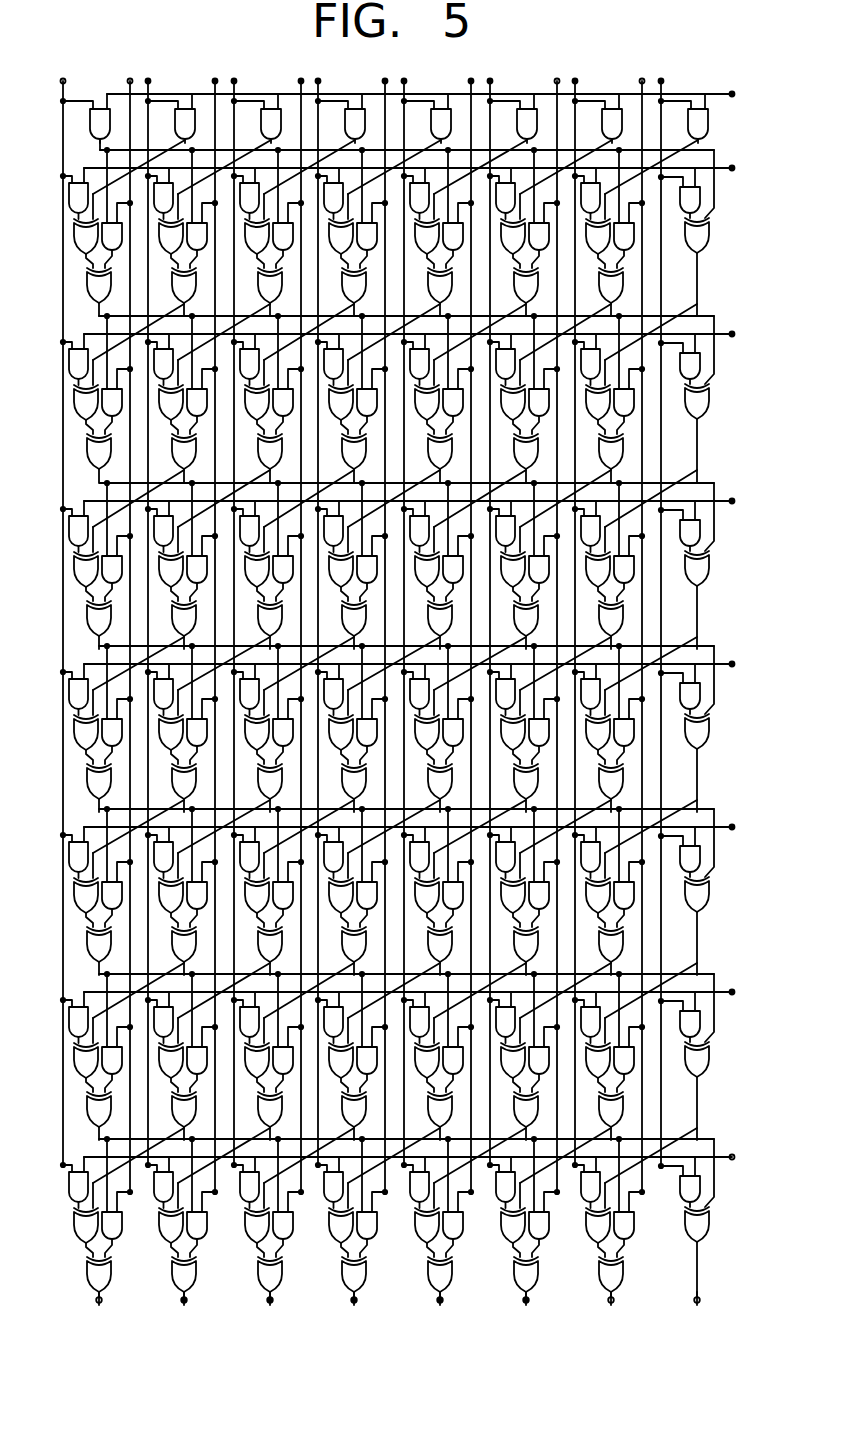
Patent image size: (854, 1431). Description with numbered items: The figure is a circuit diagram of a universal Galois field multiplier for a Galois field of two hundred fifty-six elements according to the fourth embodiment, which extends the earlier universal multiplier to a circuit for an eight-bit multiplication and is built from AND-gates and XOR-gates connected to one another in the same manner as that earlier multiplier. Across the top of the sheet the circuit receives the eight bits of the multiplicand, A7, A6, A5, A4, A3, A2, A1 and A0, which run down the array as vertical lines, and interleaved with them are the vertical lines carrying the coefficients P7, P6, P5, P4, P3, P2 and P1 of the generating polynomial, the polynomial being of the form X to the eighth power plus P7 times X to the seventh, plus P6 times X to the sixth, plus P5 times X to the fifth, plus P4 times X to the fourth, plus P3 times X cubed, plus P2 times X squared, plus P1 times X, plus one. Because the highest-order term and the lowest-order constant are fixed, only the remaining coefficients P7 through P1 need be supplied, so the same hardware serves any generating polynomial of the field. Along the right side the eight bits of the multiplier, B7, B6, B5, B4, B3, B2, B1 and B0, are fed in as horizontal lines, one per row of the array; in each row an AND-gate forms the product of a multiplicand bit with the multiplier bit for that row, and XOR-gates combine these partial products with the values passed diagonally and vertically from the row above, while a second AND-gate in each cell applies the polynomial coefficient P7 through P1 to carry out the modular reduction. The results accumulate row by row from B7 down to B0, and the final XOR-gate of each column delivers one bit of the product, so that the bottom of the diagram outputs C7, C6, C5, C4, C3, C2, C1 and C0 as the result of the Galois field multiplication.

The multiplicand A7 is at (59, 613).
The multiplicand A6 is at (150, 613).
The multiplicand A5 is at (236, 613).
The multiplicand A4 is at (320, 613).
The multiplicand A3 is at (406, 613).
The multiplicand A2 is at (492, 613).
The multiplicand A1 is at (578, 613).
The multiplicand A0 is at (663, 613).
The generating polynomial coefficient P7 is at (122, 626).
The generating polynomial coefficient P6 is at (208, 626).
The generating polynomial coefficient P5 is at (293, 626).
The generating polynomial coefficient P4 is at (378, 626).
The generating polynomial coefficient P3 is at (464, 626).
The generating polynomial coefficient P2 is at (550, 626).
The generating polynomial coefficient P1 is at (635, 626).
The multiplier B7 is at (434, 95).
The multiplier B6 is at (422, 169).
The multiplier B5 is at (422, 335).
The multiplier B4 is at (422, 502).
The multiplier B3 is at (422, 665).
The multiplier B2 is at (422, 828).
The multiplier B1 is at (422, 993).
The multiplier B0 is at (422, 1158).
The output bit C7 is at (98, 1310).
The output bit C6 is at (183, 1310).
The output bit C5 is at (269, 1310).
The output bit C4 is at (353, 1310).
The output bit C3 is at (439, 1310).
The output bit C2 is at (525, 1310).
The output bit C1 is at (610, 1310).
The output bit C0 is at (695, 1310).